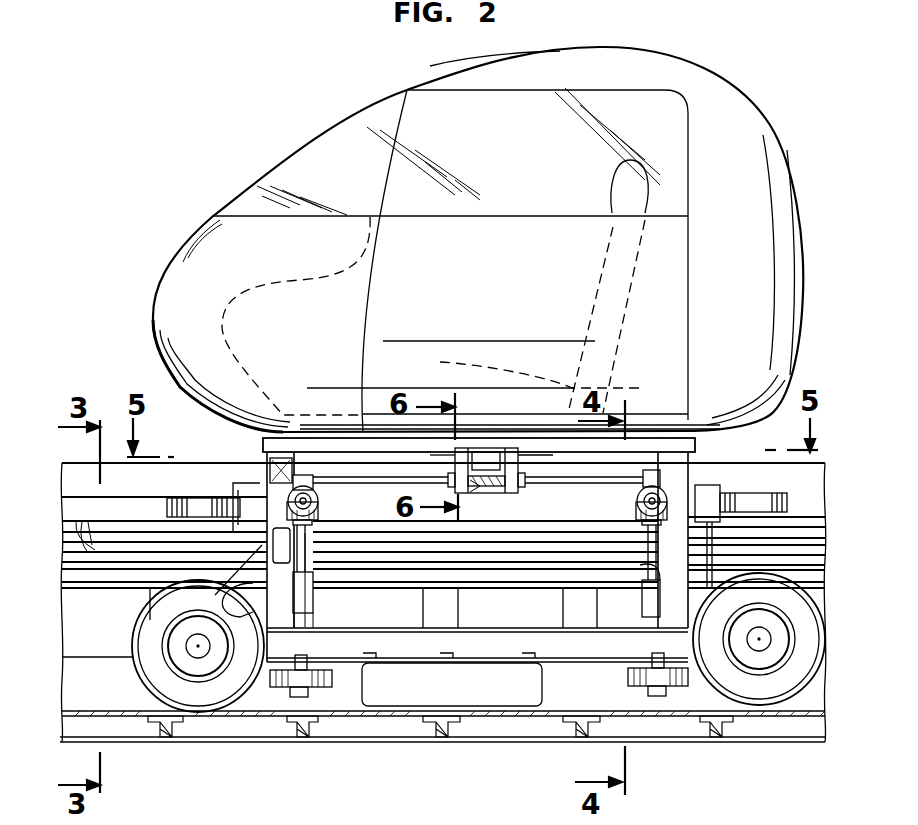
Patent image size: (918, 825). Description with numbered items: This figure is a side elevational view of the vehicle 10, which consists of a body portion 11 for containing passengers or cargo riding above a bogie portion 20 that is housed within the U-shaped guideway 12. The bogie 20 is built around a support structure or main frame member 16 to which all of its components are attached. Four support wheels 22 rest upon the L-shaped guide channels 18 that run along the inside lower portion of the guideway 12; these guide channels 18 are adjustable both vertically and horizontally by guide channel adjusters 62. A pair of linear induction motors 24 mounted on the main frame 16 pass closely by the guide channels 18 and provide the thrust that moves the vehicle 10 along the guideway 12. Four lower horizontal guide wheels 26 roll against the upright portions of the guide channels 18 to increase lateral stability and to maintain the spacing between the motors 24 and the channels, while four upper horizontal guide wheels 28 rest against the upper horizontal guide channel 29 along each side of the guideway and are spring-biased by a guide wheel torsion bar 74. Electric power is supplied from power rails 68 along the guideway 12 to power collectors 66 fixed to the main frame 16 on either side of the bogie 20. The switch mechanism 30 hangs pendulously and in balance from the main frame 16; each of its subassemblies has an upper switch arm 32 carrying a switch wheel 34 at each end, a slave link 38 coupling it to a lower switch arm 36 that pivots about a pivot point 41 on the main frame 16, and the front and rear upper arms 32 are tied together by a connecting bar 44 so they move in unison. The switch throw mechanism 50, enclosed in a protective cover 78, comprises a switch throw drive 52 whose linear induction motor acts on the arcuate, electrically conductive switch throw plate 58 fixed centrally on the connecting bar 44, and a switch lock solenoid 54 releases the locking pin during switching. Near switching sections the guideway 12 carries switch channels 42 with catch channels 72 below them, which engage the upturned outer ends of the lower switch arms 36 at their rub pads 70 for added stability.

The vehicle 10 is at (697, 43).
The body portion 11 is at (717, 97).
The guideway 12 is at (188, 777).
The main frame member 16 is at (486, 640).
The guide channels 18 is at (100, 708).
The bogie portion 20 is at (120, 612).
The support wheels 22 is at (143, 643).
The linear induction motors 24 is at (464, 691).
The lower horizontal guide wheels 26 is at (283, 683).
The upper horizontal guide wheels 28 is at (171, 500).
The upper horizontal guide channel 29 is at (118, 505).
The switch mechanism 30 is at (342, 580).
The upper switch arm 32 is at (313, 478).
The switch wheels 34 is at (321, 507).
The lower switch arm 36 is at (313, 597).
The slave link 38 is at (645, 565).
The pivot point 41 is at (316, 576).
The switch channels 42 is at (189, 463).
The connecting bar 44 is at (378, 480).
The switch throw mechanism 50 is at (514, 446).
The switch throw drive 52 is at (473, 450).
The switch lock solenoid 54 is at (506, 456).
The switch throw plate 58 is at (487, 490).
The guide channel adjusters 62 is at (305, 742).
The power collectors 66 is at (283, 563).
The power rails 68 is at (82, 525).
The rub pads 70 is at (306, 627).
The catch channels 72 is at (500, 573).
The guide wheel torsion bar 74 is at (220, 588).
The cover 78 is at (452, 460).